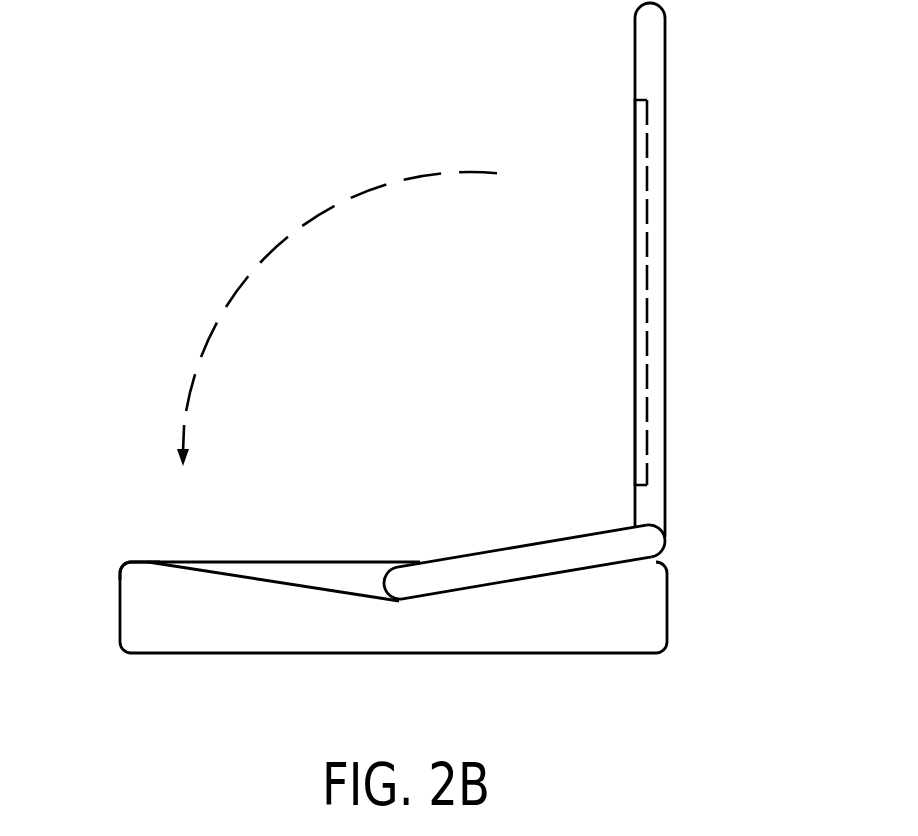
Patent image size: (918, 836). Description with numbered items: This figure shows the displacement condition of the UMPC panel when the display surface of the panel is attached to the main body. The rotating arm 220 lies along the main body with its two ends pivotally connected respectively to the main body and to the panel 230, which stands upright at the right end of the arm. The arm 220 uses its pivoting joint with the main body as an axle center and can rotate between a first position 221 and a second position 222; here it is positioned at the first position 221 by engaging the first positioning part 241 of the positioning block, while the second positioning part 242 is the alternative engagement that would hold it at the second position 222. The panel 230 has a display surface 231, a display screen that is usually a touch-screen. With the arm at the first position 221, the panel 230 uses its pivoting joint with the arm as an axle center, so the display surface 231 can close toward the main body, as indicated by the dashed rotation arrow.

The rotating arm 220 is at (430, 577).
The first position 221 is at (686, 540).
The second position 222 is at (110, 557).
The panel 230 is at (653, 19).
The display surface 231 is at (641, 215).
The first positioning part 241 is at (660, 625).
The second positioning part 242 is at (153, 637).